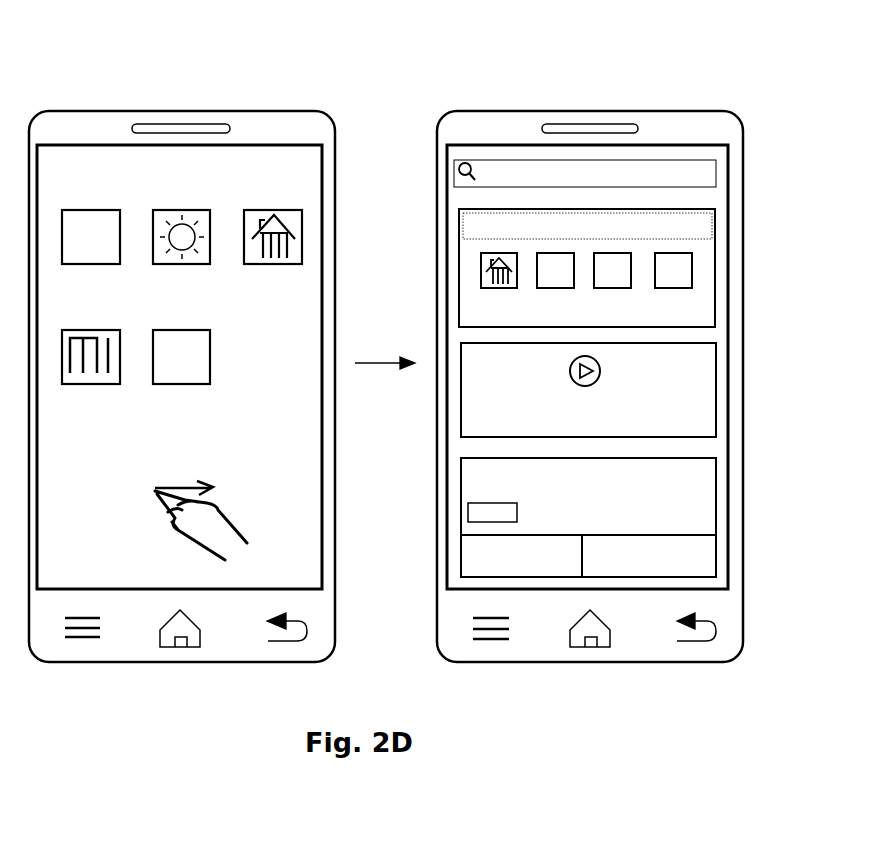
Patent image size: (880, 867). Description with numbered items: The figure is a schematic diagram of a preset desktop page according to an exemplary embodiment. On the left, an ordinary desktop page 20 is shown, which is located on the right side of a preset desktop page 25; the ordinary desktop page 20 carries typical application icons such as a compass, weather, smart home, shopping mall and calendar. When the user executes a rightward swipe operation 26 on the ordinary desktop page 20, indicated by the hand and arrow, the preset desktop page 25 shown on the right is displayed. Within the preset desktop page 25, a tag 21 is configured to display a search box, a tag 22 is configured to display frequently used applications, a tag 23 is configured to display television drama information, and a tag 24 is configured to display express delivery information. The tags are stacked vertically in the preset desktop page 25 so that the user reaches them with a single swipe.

The ordinary desktop page 20 is at (270, 143).
The tag 21 is at (716, 176).
The tag 22 is at (715, 232).
The tag 23 is at (717, 387).
The tag 24 is at (717, 489).
The preset desktop page 25 is at (660, 145).
The rightward swipe operation 26 is at (222, 510).